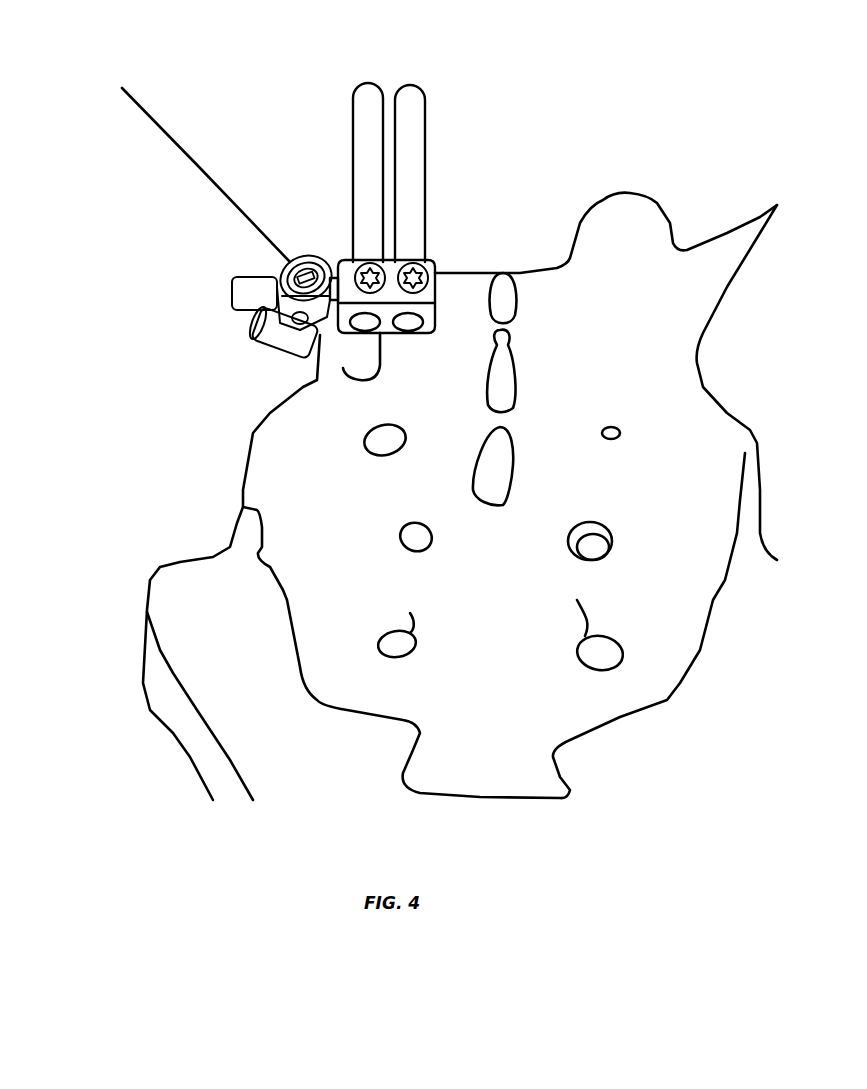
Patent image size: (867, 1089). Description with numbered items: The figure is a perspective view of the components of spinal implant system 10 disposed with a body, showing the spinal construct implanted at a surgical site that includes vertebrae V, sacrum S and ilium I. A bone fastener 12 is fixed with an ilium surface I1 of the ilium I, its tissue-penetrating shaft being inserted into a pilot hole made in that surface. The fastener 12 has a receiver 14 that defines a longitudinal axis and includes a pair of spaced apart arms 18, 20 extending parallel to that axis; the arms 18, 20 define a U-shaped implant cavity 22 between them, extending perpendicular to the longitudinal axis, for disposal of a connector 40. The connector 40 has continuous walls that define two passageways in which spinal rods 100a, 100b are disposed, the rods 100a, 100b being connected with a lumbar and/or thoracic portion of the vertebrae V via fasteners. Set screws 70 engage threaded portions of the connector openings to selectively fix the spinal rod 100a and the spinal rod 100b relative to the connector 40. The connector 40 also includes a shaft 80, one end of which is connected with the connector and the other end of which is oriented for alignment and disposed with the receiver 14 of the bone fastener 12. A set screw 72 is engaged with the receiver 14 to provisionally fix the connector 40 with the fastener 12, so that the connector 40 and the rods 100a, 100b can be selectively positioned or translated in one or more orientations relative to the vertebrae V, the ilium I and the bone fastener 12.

The spinal implant system 10 is at (459, 79).
The fastener 12 is at (294, 257).
The receiver 14 is at (299, 258).
The arm 18 is at (312, 258).
The arm 20 is at (303, 333).
The implant cavity 22 is at (277, 278).
The connector 40 is at (437, 300).
The set screw 70 is at (377, 272).
The set screw 72 is at (260, 327).
The shaft 80 is at (247, 288).
The spinal rod 100a is at (425, 134).
The spinal rod 100b is at (353, 118).
The ilium I is at (168, 105).
The ilium surface I1 is at (167, 130).
The vertebrae V is at (681, 122).
The sacrum S is at (346, 728).